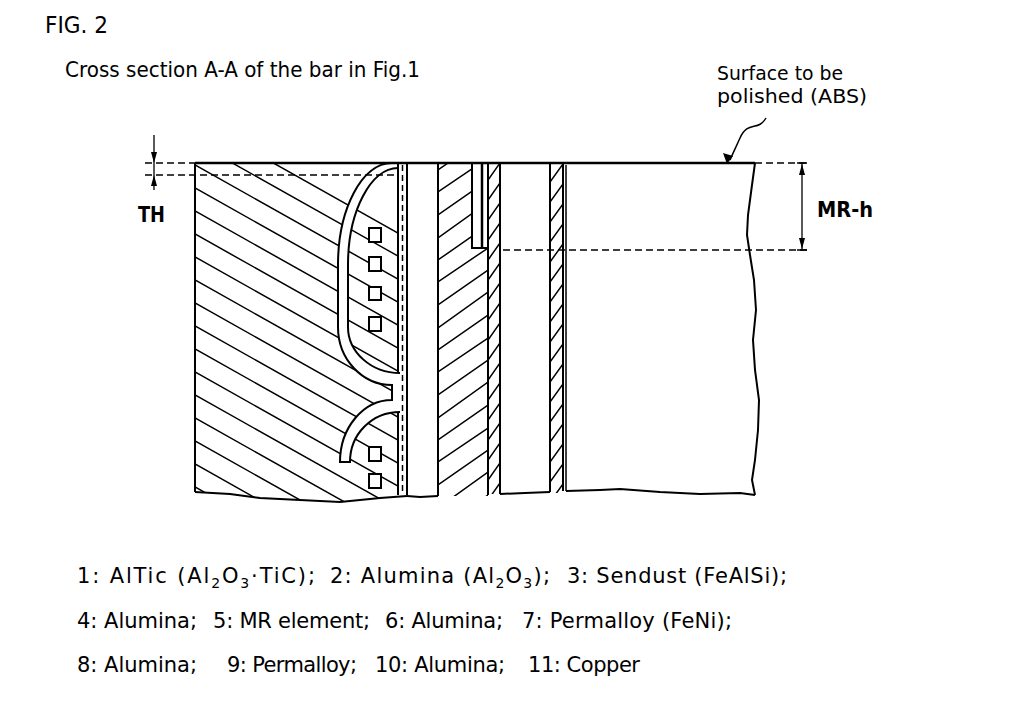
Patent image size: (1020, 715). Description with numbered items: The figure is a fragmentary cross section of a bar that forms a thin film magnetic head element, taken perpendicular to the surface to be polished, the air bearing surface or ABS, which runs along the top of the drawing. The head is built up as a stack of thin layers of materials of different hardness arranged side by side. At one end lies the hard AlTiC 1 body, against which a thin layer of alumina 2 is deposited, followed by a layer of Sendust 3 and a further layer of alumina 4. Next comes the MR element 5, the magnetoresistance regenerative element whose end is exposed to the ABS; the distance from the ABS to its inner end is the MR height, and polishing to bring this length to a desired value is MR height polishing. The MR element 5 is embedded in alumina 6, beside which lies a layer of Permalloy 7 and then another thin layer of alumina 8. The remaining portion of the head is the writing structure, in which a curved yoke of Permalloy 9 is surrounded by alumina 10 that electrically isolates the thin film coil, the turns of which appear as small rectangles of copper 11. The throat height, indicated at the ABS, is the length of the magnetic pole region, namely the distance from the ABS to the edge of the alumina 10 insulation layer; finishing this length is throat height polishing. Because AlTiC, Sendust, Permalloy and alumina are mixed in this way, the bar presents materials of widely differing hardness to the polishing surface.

The AlTiC 1 is at (670, 172).
The alumina 2 is at (565, 170).
The Sendust 3 is at (545, 164).
The alumina 4 is at (502, 167).
The MR element 5 is at (480, 167).
The alumina 6 is at (452, 167).
The Permalloy 7 is at (420, 167).
The alumina 8 is at (402, 162).
The Permalloy 9 is at (386, 162).
The alumina 10 is at (286, 176).
The copper 11 is at (388, 490).